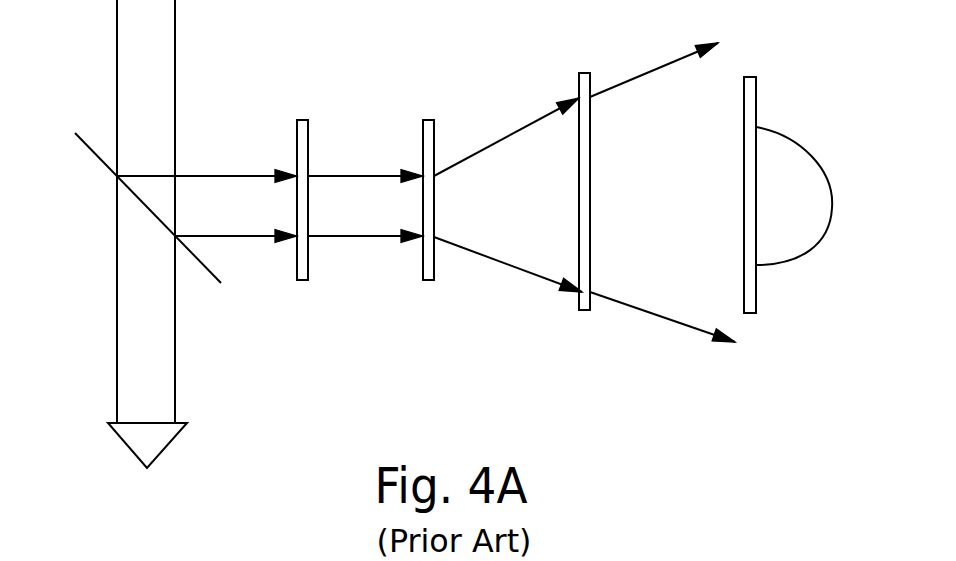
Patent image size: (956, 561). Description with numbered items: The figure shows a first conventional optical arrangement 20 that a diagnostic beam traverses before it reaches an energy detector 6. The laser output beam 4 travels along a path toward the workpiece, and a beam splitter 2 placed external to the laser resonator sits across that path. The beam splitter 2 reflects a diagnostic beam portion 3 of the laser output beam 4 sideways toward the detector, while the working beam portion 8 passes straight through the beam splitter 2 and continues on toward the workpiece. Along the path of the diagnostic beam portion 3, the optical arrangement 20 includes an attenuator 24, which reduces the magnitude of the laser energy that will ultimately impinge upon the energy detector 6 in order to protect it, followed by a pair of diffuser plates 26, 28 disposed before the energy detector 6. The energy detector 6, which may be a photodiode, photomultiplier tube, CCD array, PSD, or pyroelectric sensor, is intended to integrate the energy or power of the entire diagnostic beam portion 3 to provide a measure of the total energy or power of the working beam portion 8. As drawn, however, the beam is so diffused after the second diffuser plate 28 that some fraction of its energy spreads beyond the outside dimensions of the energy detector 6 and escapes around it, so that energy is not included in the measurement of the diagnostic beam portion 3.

The beam splitter 2 is at (88, 148).
The diagnostic beam portion 3 is at (239, 215).
The laser output beam 4 is at (117, 52).
The energy detector 6 is at (787, 140).
The working beam portion 8 is at (117, 337).
The optical arrangement 20 is at (283, 334).
The attenuator 24 is at (308, 134).
The first diffuser plate 26 is at (436, 125).
The second diffuser plate 28 is at (592, 78).